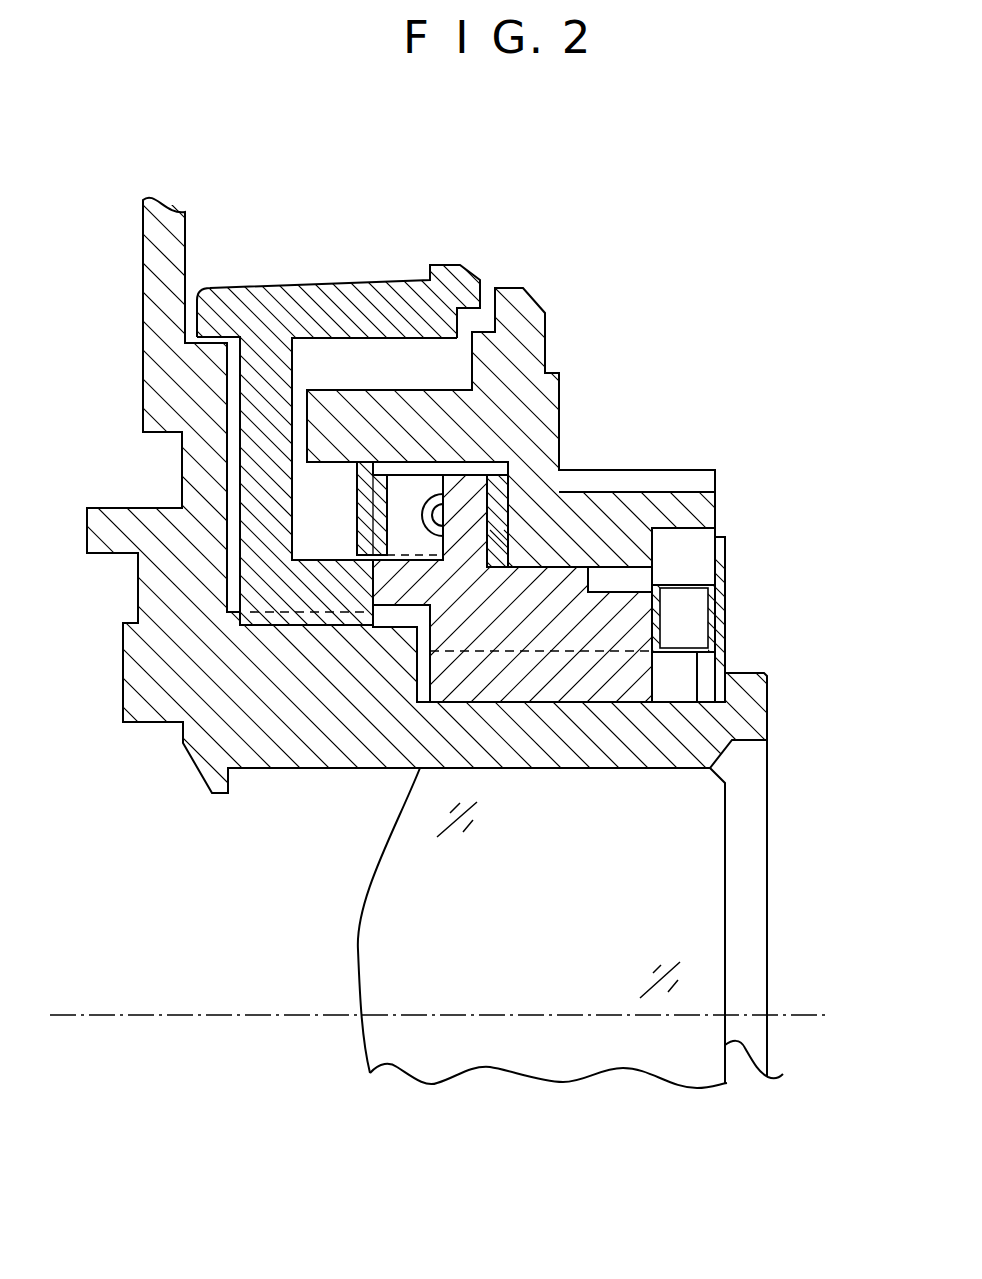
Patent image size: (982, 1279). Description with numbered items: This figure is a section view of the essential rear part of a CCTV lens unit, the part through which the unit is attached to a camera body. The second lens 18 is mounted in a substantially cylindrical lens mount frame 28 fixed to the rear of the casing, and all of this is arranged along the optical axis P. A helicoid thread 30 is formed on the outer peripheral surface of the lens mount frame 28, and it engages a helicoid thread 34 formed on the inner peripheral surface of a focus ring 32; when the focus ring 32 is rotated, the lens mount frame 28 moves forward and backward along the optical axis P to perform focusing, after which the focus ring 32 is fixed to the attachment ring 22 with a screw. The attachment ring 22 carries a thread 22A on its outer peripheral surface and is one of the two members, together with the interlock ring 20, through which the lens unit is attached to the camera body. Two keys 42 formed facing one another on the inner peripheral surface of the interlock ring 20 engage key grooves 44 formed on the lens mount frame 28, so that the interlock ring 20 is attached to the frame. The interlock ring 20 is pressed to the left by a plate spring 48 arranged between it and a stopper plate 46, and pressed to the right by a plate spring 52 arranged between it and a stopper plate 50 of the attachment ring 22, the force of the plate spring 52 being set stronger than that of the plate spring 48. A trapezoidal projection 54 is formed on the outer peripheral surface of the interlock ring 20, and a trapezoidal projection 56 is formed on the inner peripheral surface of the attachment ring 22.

The second lens 18 is at (362, 935).
The interlock ring 20 is at (583, 567).
The attachment ring 22 is at (505, 287).
The thread 22A is at (690, 483).
The lens mount frame 28 is at (247, 767).
The helicoid thread 30 is at (382, 618).
The focus ring 32 is at (272, 282).
The helicoid thread 34 is at (313, 627).
The keys 42 is at (638, 683).
The key grooves 44 is at (668, 700).
The stopper plate 46 is at (727, 547).
The plate spring 48 is at (727, 613).
The stopper plate 50 is at (357, 498).
The plate spring 52 is at (388, 394).
The trapezoidal projection 54 is at (617, 580).
The trapezoidal projection 56 is at (497, 521).
The optical axis P is at (262, 1017).